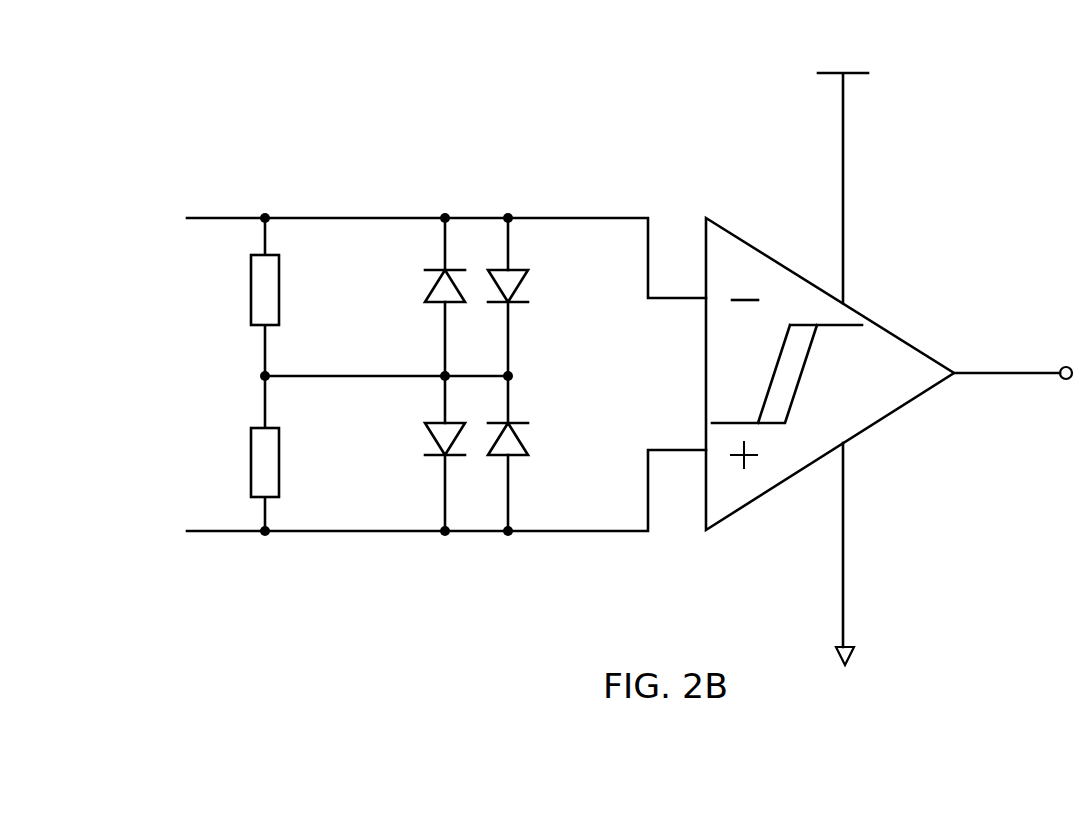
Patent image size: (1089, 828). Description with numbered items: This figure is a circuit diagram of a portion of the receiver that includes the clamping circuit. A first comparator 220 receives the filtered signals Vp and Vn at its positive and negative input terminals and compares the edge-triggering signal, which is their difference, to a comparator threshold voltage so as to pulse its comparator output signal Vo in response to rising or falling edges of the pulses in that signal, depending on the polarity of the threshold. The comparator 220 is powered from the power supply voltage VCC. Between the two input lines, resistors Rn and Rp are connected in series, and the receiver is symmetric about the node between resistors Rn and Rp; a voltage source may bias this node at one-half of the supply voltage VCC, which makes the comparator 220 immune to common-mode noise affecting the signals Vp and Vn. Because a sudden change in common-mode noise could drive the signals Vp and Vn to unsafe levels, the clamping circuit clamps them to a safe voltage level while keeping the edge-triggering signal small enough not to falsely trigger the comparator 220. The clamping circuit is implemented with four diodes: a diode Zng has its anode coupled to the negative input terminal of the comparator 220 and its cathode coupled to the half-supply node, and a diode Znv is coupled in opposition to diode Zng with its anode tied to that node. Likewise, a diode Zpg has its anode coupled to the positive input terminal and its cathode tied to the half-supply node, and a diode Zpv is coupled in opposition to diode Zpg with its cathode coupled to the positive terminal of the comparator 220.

The first comparator 220 is at (911, 401).
The resistor Rn is at (285, 297).
The resistor Rp is at (284, 453).
The diode Znv is at (422, 297).
The diode Zng is at (534, 297).
The diode Zpv is at (422, 453).
The diode Zpg is at (536, 453).
The filtered signal Vn is at (446, 240).
The filtered signal Vp is at (446, 512).
The power supply voltage VCC is at (843, 351).
The comparator output signal Vo is at (1013, 356).